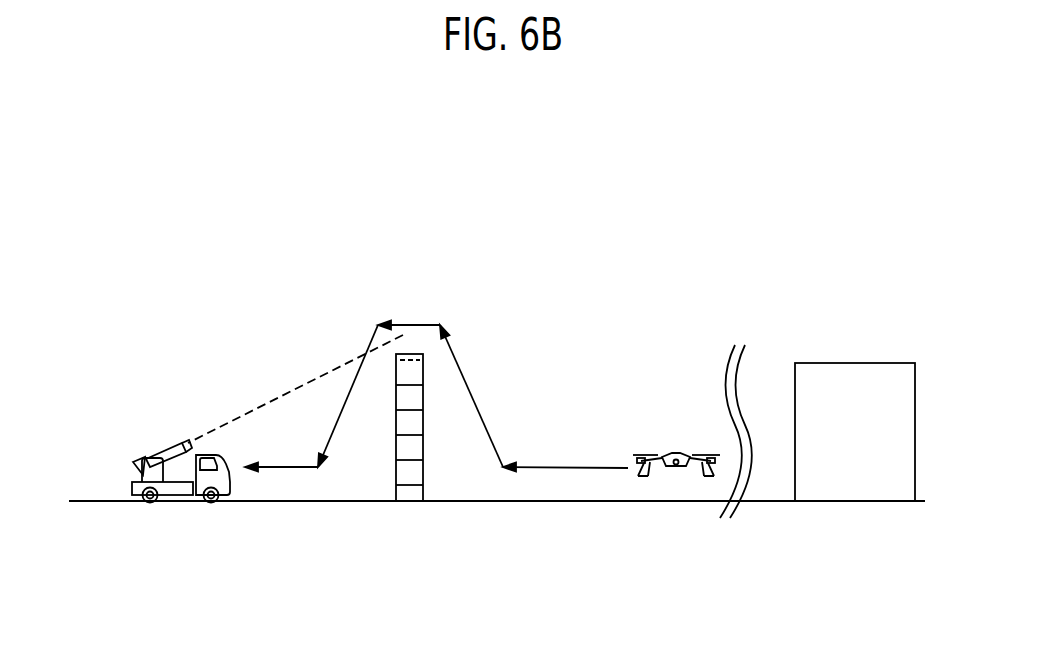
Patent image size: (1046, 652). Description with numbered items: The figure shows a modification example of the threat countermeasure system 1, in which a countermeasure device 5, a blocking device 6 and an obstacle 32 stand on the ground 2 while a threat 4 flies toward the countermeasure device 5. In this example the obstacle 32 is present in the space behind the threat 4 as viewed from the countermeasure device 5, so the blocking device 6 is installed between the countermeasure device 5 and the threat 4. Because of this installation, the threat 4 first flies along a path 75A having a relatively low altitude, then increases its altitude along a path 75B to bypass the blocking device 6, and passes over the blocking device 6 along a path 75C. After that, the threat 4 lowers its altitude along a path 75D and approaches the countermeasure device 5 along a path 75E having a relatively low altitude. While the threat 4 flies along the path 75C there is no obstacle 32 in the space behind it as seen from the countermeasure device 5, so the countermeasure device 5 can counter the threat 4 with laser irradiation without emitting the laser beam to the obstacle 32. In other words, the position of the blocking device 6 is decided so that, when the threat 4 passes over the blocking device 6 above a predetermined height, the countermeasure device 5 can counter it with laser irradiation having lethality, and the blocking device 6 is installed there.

The threat countermeasure system 1 is at (757, 138).
The ground 2 is at (600, 502).
The threat 4 is at (680, 450).
The countermeasure device 5 is at (182, 503).
The blocking device 6 is at (408, 488).
The obstacle 32 is at (850, 487).
The path 75A is at (596, 466).
The path 75B is at (490, 381).
The path 75C is at (412, 322).
The path 75D is at (340, 414).
The path 75E is at (280, 466).